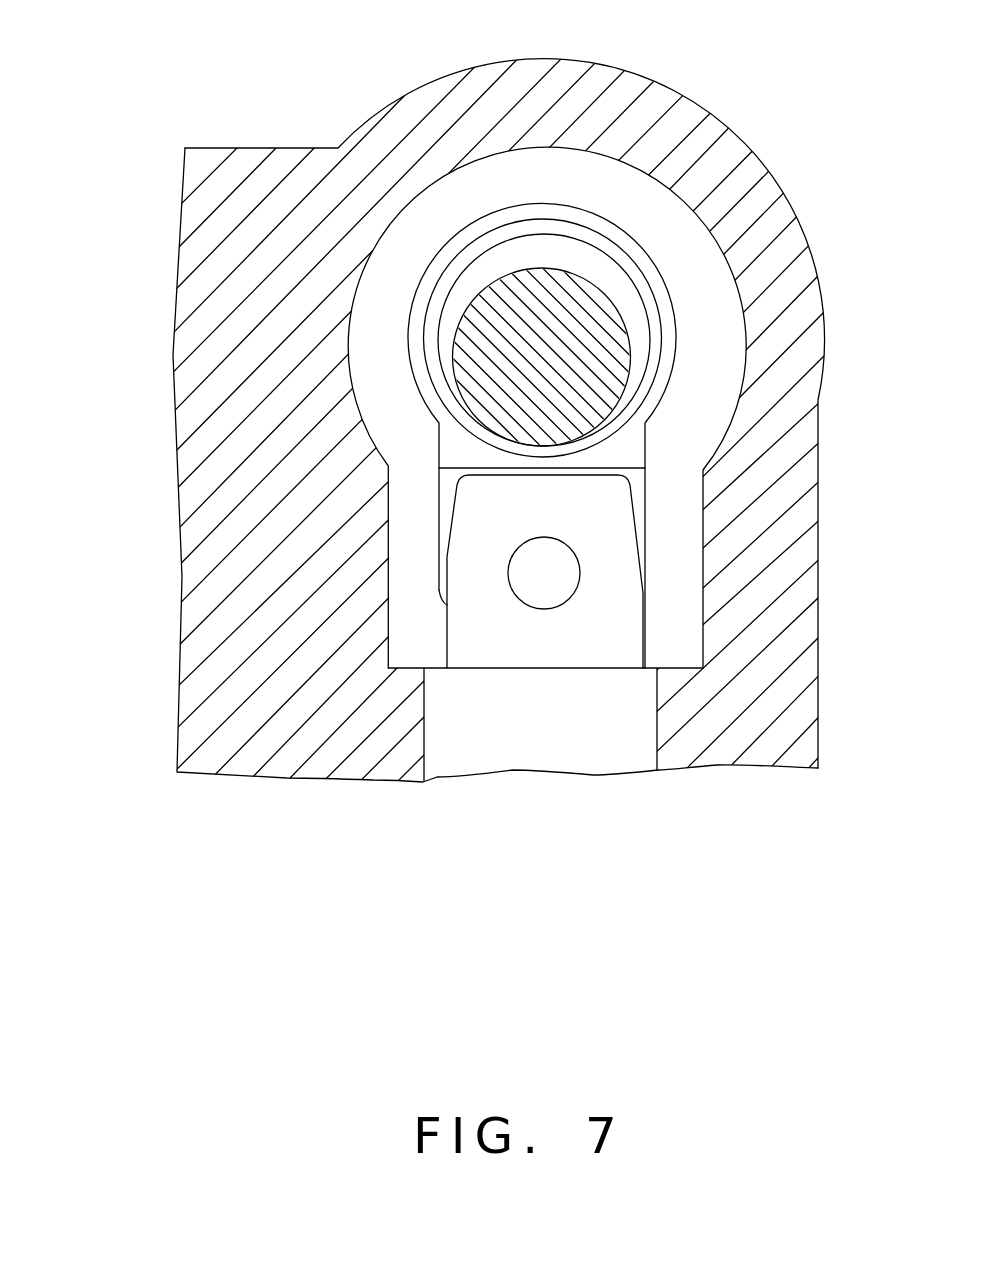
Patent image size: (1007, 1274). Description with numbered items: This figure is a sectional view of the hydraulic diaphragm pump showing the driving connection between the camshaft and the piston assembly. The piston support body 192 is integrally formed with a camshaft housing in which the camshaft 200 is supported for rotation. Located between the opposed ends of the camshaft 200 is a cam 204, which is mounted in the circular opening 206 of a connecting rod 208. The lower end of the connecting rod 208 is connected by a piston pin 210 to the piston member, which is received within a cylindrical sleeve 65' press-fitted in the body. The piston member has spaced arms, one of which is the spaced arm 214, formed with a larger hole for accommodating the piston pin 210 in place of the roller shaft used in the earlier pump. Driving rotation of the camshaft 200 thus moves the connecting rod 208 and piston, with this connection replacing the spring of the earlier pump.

The piston support body 192 is at (397, 98).
The cam 204 is at (592, 257).
The camshaft 200 is at (607, 315).
The circular opening 206 is at (444, 374).
The connecting rod 208 is at (610, 459).
The piston pin 210 is at (563, 566).
The spaced arm 214 is at (625, 614).
The cylindrical sleeve 65' is at (545, 792).